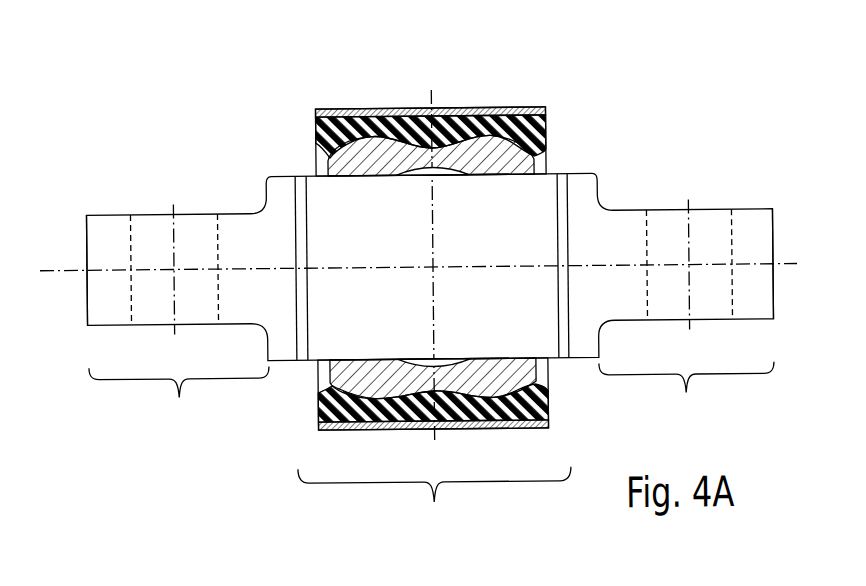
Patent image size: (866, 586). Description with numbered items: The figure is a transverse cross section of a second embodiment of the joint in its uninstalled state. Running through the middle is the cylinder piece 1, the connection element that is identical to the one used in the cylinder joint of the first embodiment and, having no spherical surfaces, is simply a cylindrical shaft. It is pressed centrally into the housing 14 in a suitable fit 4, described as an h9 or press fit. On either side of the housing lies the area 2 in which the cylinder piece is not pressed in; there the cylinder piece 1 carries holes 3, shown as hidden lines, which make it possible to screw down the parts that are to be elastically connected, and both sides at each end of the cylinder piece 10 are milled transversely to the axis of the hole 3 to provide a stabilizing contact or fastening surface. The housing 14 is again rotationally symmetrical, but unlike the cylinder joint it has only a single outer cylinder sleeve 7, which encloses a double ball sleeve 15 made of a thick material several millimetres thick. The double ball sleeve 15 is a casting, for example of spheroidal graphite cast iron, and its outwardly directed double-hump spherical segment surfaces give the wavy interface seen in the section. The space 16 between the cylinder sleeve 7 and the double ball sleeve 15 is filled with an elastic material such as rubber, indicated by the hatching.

The cylinder piece 1 is at (262, 176).
The area 2 is at (87, 289).
The holes 3 is at (156, 225).
The fit 4 is at (457, 240).
The outer cylinder sleeve 7 is at (541, 109).
The cylinder piece 10 is at (432, 399).
The housing 14 is at (435, 503).
The double ball sleeve 15 is at (519, 159).
The space 16 is at (357, 119).